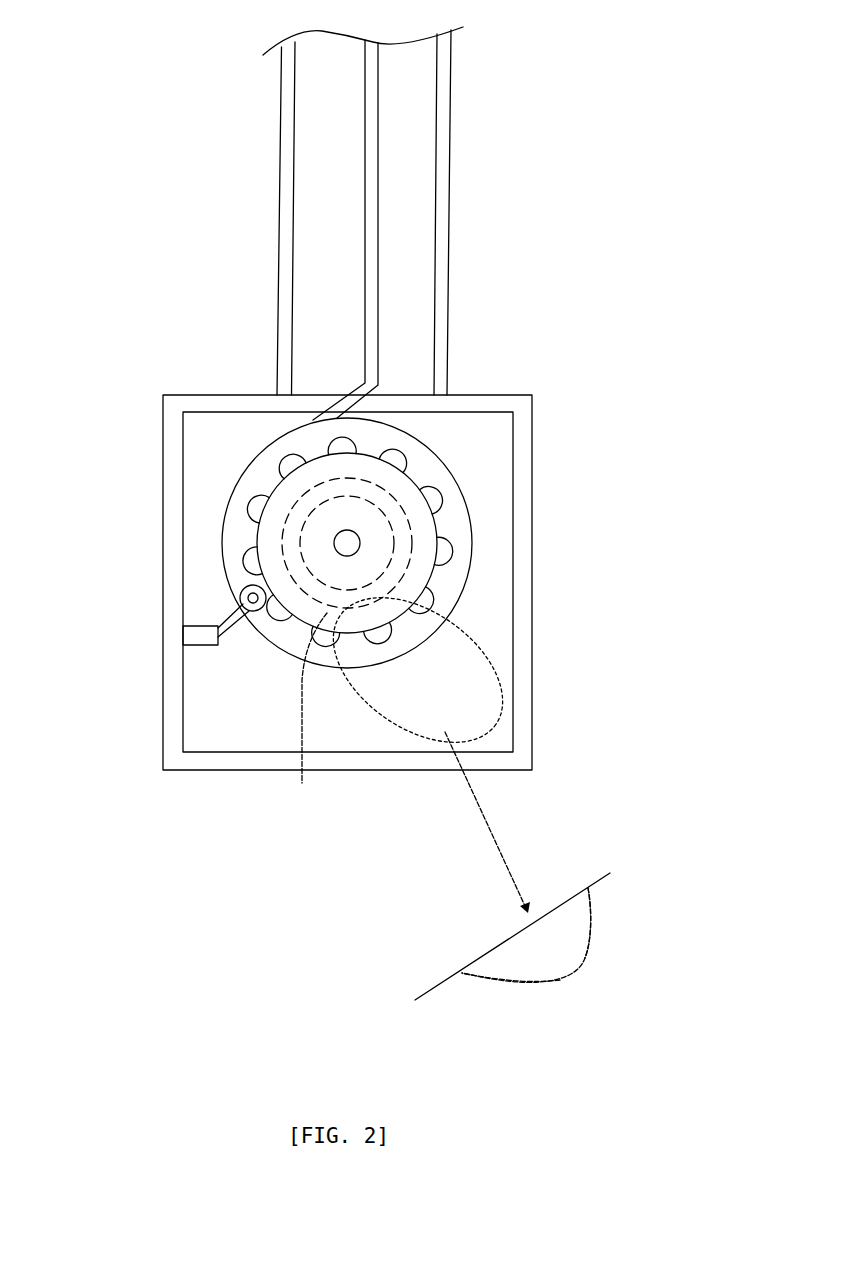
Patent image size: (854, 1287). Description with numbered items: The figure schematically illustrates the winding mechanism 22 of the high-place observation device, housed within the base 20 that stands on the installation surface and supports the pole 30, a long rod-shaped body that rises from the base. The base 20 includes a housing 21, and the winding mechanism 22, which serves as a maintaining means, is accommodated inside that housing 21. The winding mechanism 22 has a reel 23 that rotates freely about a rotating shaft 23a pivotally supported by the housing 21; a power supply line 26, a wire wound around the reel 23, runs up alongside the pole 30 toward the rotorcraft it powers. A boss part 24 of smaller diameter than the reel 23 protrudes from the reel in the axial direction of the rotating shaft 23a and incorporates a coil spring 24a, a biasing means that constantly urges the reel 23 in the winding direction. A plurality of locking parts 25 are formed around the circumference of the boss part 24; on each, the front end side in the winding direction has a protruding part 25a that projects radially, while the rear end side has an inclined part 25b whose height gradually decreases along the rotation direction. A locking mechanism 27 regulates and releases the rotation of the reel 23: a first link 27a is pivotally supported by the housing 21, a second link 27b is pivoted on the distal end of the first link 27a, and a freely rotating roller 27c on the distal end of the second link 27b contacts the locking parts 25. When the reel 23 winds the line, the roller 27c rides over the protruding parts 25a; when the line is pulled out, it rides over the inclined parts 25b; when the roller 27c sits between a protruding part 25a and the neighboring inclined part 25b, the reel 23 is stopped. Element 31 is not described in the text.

The base 20 is at (409, 555).
The housing 21 is at (532, 447).
The winding mechanism 22 is at (495, 524).
The reel 23 is at (470, 563).
The rotating shaft 23a is at (338, 535).
The boss part 24 is at (436, 585).
The coil spring 24a is at (305, 710).
The locking part 25 is at (290, 462).
The protruding part 25a is at (407, 628).
The inclined part 25b is at (370, 644).
The power supply line 26 is at (375, 197).
The locking mechanism 27 is at (150, 622).
The first link 27a is at (193, 635).
The second link 27b is at (222, 622).
The roller 27c is at (242, 598).
The pole 30 is at (411, 223).
The outer supply pipe 31 is at (445, 250).